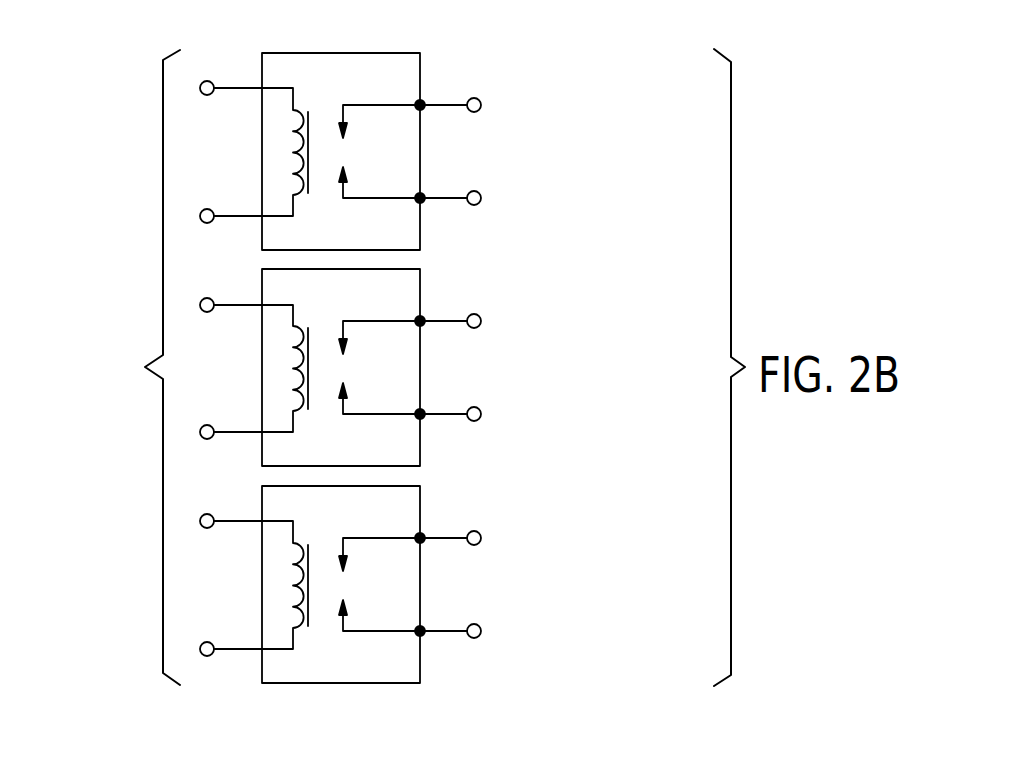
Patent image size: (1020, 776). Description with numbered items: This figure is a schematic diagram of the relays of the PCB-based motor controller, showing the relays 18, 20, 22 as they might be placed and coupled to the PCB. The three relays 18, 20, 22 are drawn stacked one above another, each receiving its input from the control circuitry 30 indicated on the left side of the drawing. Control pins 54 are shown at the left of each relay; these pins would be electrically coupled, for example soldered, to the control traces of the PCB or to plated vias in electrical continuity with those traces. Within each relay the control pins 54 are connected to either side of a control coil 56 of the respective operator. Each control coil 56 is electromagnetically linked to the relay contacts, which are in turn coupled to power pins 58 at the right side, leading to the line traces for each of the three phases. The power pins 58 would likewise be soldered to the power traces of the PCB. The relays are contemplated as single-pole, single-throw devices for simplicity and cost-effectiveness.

The relay 18 is at (420, 77).
The relay 20 is at (420, 293).
The relay 22 is at (420, 510).
The control circuitry 30 is at (102, 440).
The control pins 54 is at (207, 60).
The control coil 56 is at (293, 153).
The power pins 58 is at (477, 672).